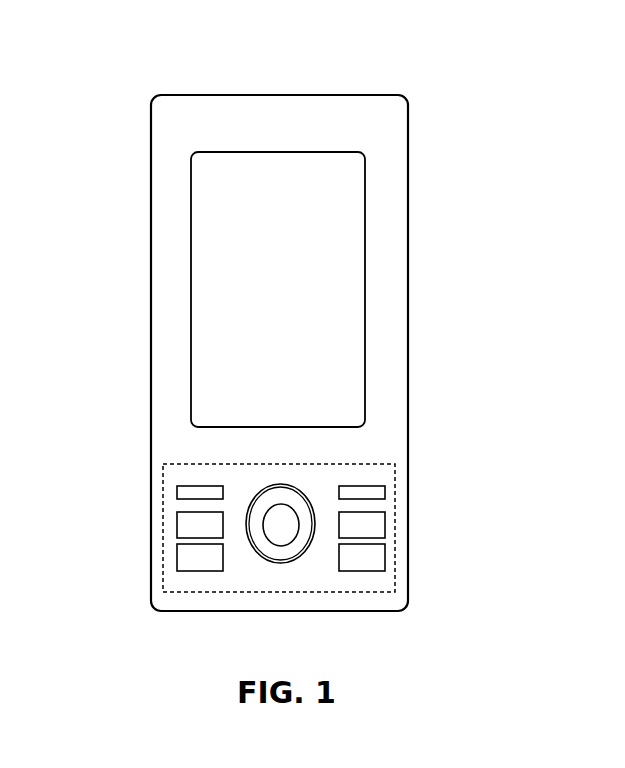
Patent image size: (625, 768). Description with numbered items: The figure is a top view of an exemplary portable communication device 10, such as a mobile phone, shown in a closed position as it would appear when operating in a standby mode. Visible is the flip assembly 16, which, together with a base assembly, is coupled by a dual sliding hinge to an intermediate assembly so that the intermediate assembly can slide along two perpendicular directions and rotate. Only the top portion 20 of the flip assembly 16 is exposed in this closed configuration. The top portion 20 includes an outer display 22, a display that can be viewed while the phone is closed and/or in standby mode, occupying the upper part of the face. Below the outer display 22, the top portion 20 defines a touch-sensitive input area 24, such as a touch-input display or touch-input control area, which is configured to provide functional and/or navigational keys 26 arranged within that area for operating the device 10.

The portable communication device 10 is at (451, 64).
The flip assembly 16 is at (467, 143).
The top portion of the flip assembly 20 is at (155, 152).
The outer display 22 is at (365, 253).
The touch-sensitive input area 24 is at (162, 467).
The functional and/or navigational keys 26 is at (412, 500).